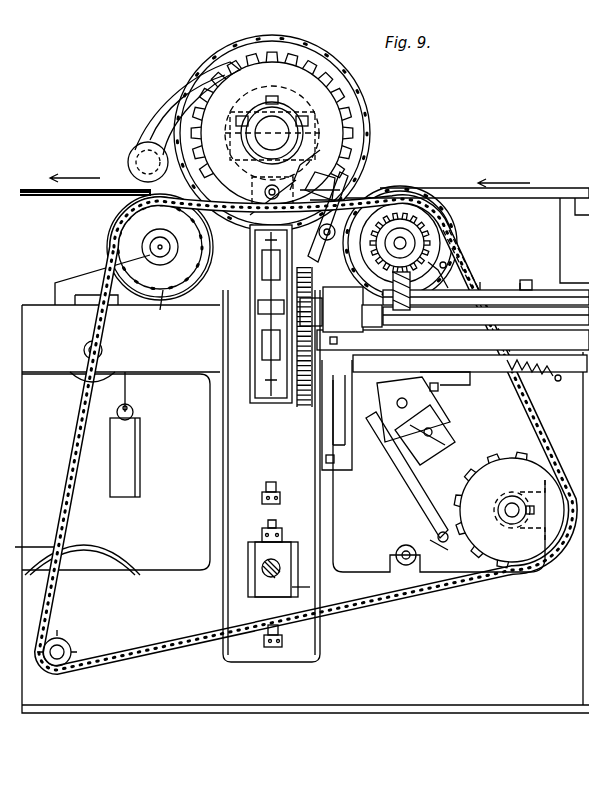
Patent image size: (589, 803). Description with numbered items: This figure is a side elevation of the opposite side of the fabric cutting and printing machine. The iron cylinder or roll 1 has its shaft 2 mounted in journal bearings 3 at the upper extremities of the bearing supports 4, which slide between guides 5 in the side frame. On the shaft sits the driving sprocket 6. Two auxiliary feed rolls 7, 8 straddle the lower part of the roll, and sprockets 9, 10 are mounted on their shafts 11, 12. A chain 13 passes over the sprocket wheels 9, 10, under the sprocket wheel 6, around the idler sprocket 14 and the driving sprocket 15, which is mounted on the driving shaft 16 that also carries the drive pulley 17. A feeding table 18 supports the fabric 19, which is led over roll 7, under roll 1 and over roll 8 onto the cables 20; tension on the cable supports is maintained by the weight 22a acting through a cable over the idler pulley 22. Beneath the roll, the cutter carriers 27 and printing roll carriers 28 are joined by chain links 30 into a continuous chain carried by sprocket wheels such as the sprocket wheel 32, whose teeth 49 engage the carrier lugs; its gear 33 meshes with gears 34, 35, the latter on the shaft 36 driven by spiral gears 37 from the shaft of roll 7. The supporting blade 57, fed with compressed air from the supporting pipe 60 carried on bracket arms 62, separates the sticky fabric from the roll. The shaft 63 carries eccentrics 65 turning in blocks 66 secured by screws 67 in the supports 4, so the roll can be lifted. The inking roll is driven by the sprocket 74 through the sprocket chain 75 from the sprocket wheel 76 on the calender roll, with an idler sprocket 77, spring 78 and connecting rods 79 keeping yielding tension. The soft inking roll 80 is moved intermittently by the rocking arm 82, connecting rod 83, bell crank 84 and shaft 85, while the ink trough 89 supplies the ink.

The iron cylinder or roll 1 is at (240, 50).
The shaft 2 is at (272, 150).
The journal bearings 3 is at (322, 155).
The bearing supports 4 is at (226, 510).
The guides 5 is at (326, 488).
The driving sprocket 6 is at (305, 65).
The auxiliary feed roll 7 is at (430, 228).
The auxiliary feed roll 8 is at (108, 244).
The sprocket 9 is at (450, 268).
The sprocket 10 is at (164, 300).
The shaft 11 is at (428, 242).
The shaft 12 is at (165, 252).
The chain 13 is at (58, 512).
The idler sprocket 14 is at (509, 510).
The driving sprocket 15 is at (70, 646).
The driving shaft 16 is at (50, 664).
The drive pulley 17 is at (110, 566).
The feeding table 18 is at (552, 198).
The fabric 19 is at (124, 188).
The cables 20 is at (62, 194).
The idler pulley 22 is at (72, 376).
The weight 22a is at (128, 470).
The cutter carriers 27 is at (252, 290).
The printing roll carriers 28 is at (252, 358).
The chain links 30 is at (252, 380).
The sprocket wheel 32 is at (252, 392).
The gear 33 is at (346, 341).
The gear 34 is at (300, 418).
The gear 35 is at (331, 309).
The shaft 36 is at (545, 290).
The spiral gears 37 is at (412, 290).
The teeth 49 is at (252, 280).
The supporting blade 57 is at (250, 178).
The supporting pipe 60 is at (130, 158).
The bracket arms 62 is at (178, 110).
The shaft 63 is at (250, 553).
The eccentrics 65 is at (265, 580).
The blocks 66 is at (312, 587).
The screws 67 is at (292, 650).
The sprocket 74 is at (378, 327).
The sprocket chain 75 is at (185, 228).
The sprocket wheel 76 is at (348, 160).
The idler sprocket 77 is at (318, 186).
The spring 78 is at (548, 360).
The connecting rods 79 is at (345, 185).
The soft inking roll 80 is at (420, 388).
The rocking arm 82 is at (372, 398).
The connecting rod 83 is at (408, 502).
The bell crank 84 is at (430, 548).
The shaft 85 is at (396, 554).
The ink trough 89 is at (440, 428).